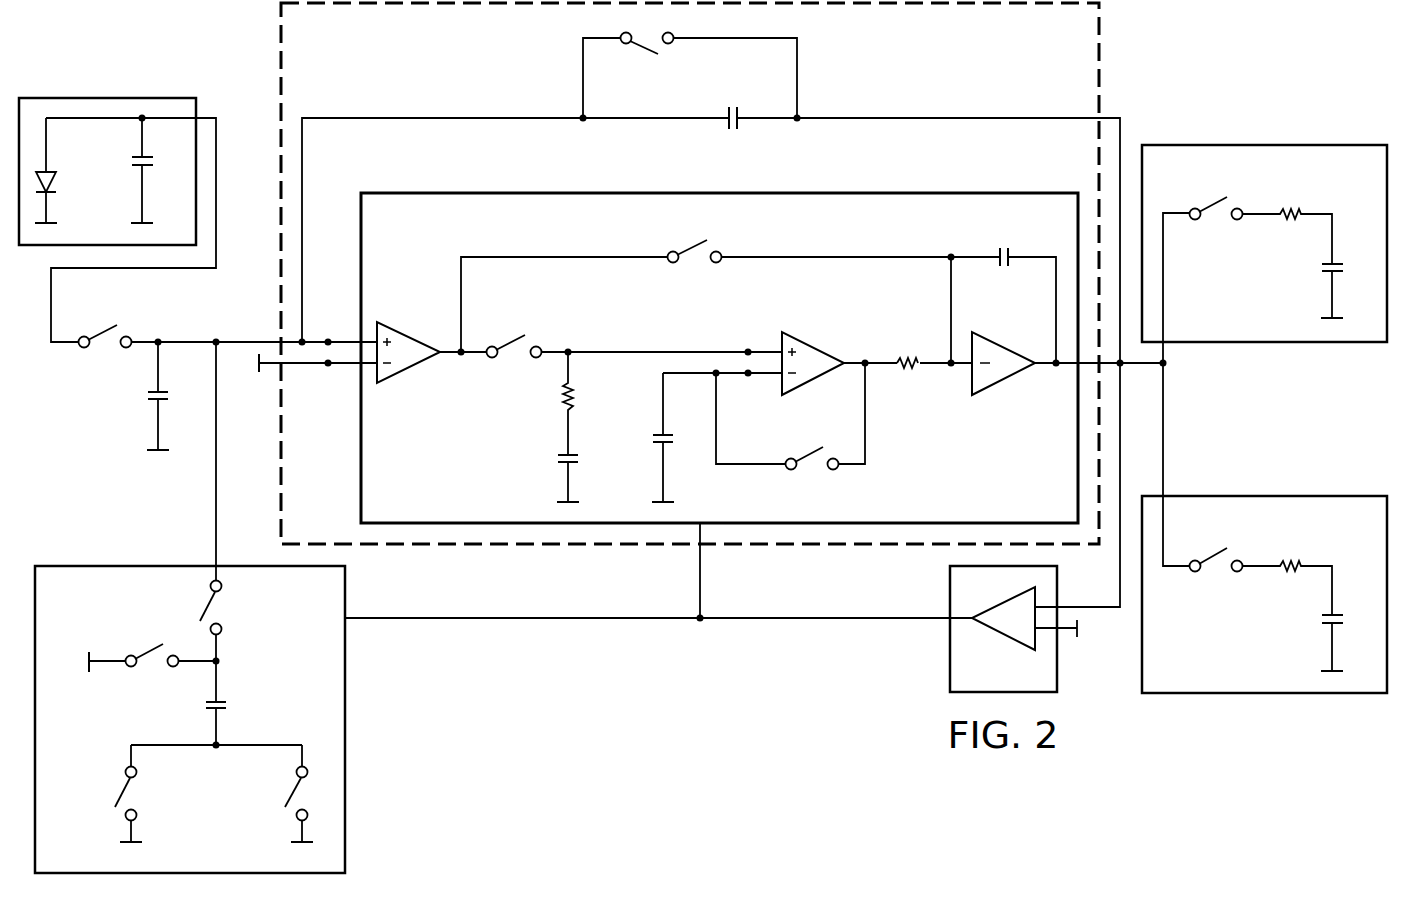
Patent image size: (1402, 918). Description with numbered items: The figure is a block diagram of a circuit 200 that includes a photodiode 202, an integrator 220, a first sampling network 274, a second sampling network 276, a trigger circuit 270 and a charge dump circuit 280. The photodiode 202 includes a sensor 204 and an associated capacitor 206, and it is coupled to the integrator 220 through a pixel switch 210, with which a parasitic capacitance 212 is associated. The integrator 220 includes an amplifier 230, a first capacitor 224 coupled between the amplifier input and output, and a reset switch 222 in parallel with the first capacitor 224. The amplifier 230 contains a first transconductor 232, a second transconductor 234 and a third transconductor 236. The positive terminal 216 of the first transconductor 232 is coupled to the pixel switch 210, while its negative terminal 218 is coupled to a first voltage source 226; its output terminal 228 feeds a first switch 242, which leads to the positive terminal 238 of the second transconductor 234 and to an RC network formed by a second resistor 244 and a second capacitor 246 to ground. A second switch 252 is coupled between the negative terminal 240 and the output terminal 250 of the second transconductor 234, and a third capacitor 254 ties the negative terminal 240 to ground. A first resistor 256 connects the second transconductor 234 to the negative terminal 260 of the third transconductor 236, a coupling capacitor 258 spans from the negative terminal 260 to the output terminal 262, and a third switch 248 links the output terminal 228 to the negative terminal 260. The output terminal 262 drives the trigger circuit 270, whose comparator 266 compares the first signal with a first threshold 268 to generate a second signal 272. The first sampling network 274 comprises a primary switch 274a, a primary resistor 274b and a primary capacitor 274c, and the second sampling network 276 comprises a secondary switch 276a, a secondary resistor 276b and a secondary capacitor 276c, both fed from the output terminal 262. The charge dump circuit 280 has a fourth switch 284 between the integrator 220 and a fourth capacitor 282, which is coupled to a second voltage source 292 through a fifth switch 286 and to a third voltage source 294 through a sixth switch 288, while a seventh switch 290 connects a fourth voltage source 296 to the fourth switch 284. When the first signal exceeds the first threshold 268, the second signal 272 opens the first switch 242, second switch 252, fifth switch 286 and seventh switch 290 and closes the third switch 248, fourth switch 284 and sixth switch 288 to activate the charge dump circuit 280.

The circuit 200 is at (522, 748).
The photodiode 202 is at (57, 93).
The sensor 204 is at (56, 183).
The capacitor Ca 206 is at (130, 160).
The pixel switch PS 210 is at (106, 326).
The parasitic capacitance Cpa 212 is at (147, 397).
The positive terminal 216 is at (328, 337).
The negative terminal 218 is at (326, 372).
The integrator 220 is at (276, 76).
The reset switch RS 222 is at (643, 53).
The first capacitor C1 224 is at (735, 104).
The first voltage source V1 226 is at (262, 372).
The output terminal 228 is at (457, 362).
The amplifier 230 is at (578, 189).
The first transconductor gm1 232 is at (414, 337).
The second transconductor gm2 234 is at (797, 340).
The third transconductor gm3 236 is at (1008, 383).
The positive terminal 238 is at (748, 344).
The negative terminal 240 is at (750, 381).
The first switch SZ1 242 is at (510, 337).
The second resistor R2 244 is at (560, 398).
The second capacitor C2 246 is at (557, 460).
The third switch S3 248 is at (690, 246).
The output terminal 250 is at (866, 352).
The second switch SZ2 252 is at (812, 447).
The third capacitor C3 254 is at (652, 440).
The first resistor R1 256 is at (906, 356).
The coupling capacitor Cc 258 is at (1006, 268).
The negative terminal 260 is at (957, 372).
The output terminal 262 is at (1148, 367).
The comparator 266 is at (1002, 637).
The first threshold Vt 268 is at (1083, 642).
The trigger circuit 270 is at (948, 634).
The second signal CD 272 is at (658, 622).
The first sampling network 274 is at (1327, 141).
The primary switch Sp 274a is at (1212, 203).
The primary resistor Rp 274b is at (1290, 205).
The primary capacitor Cp 274c is at (1320, 270).
The second sampling network 276 is at (1337, 702).
The secondary switch Ss 276a is at (1213, 556).
The secondary resistor Rs 276b is at (1290, 557).
The secondary capacitor Cs 276c is at (1320, 620).
The charge dump circuit 280 is at (354, 765).
The fourth capacitor C4 282 is at (205, 706).
The fourth switch S4 284 is at (205, 606).
The fifth switch SZ5 286 is at (120, 791).
The sixth switch S6 288 is at (292, 791).
The seventh switch SZ7 290 is at (155, 646).
The second voltage source V2 292 is at (120, 836).
The third voltage source V3 294 is at (290, 836).
The fourth voltage source V4 296 is at (85, 674).